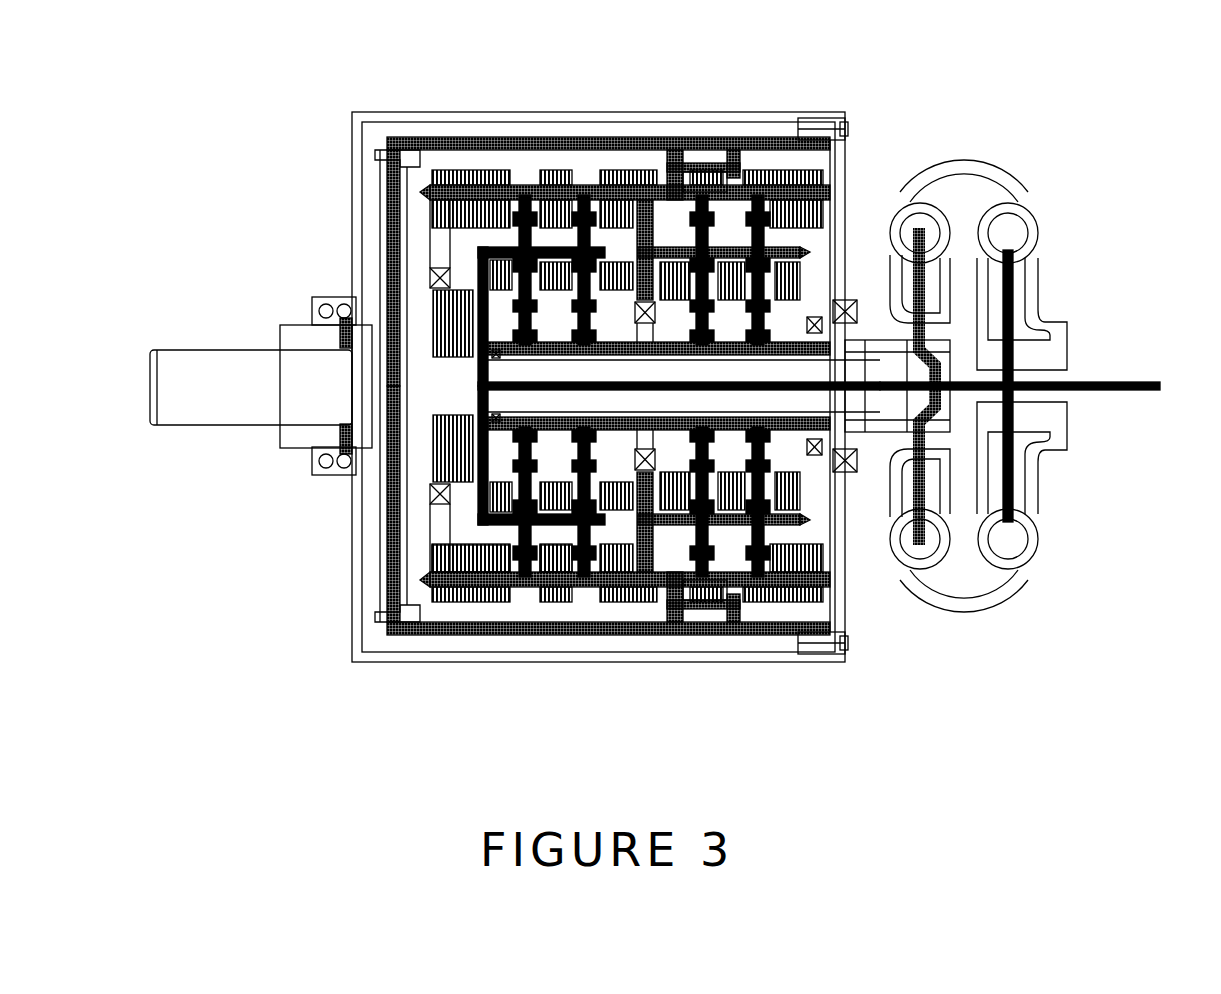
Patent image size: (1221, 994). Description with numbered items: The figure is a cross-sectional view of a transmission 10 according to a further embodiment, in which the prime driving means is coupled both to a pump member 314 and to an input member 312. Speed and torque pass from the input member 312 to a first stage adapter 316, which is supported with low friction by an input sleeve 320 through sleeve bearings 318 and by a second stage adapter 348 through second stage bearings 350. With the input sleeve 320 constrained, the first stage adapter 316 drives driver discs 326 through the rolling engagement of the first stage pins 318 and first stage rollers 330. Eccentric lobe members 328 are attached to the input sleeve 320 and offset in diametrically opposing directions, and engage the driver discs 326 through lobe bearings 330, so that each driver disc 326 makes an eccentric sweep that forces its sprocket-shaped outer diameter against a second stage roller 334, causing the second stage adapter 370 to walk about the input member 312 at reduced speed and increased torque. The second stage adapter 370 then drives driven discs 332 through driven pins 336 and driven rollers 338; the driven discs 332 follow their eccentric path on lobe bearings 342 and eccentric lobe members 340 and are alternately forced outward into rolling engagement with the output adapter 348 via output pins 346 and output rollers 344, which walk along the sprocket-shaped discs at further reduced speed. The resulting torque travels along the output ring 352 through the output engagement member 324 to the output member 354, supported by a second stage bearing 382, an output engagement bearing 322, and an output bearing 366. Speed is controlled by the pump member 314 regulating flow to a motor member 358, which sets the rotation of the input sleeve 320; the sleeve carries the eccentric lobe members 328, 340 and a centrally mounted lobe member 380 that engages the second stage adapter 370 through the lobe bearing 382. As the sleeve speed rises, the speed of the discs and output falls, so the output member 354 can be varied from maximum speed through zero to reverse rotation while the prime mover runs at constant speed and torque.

The actuator system 10 is at (330, 20).
The input member 312 is at (1080, 380).
The pump member 314 is at (1040, 238).
The first stage adapter 316 is at (440, 306).
The first stage pins 318 is at (822, 410).
The input sleeve 320 is at (836, 320).
The output engagement bearing 322 is at (370, 422).
The output engagement member 324 is at (392, 577).
The driver discs 326 is at (548, 592).
The eccentric lobe members 328 is at (476, 248).
The first stage rollers 330 is at (528, 178).
The driven discs 332 is at (746, 178).
The second stage roller 334 is at (573, 178).
The driven pins 336 is at (797, 517).
The driven rollers 338 is at (705, 195).
The eccentric lobe members 340 is at (730, 386).
The lobe bearings 342 is at (631, 386).
The output rollers 344 is at (722, 592).
The output pins 346 is at (830, 580).
The output adapter 348 is at (822, 172).
The second stage bearings 350 is at (815, 318).
The output ring 352 is at (605, 634).
The output member 354 is at (200, 378).
The motor member 358 is at (968, 162).
The output bearing 366 is at (320, 300).
The second stage adapter 370 is at (437, 535).
The centrally mounted lobe member 380 is at (662, 386).
The second stage bearing 382 is at (437, 495).